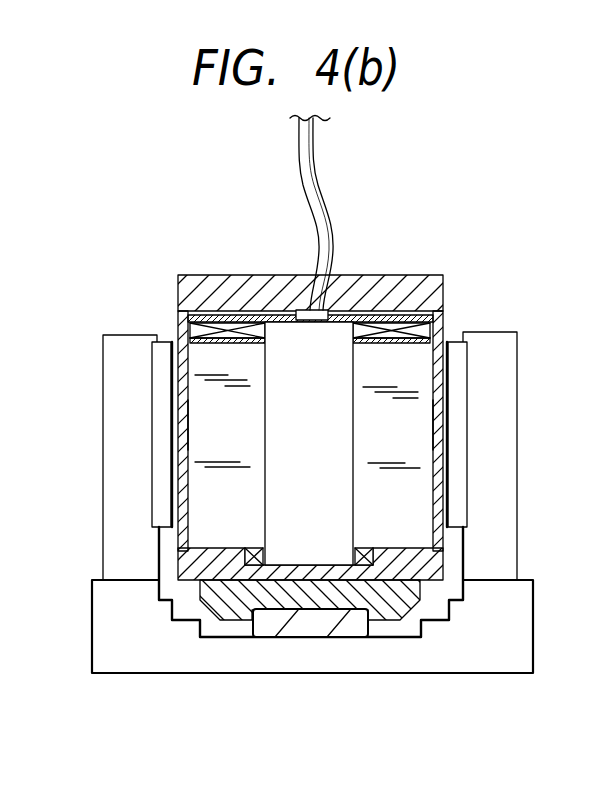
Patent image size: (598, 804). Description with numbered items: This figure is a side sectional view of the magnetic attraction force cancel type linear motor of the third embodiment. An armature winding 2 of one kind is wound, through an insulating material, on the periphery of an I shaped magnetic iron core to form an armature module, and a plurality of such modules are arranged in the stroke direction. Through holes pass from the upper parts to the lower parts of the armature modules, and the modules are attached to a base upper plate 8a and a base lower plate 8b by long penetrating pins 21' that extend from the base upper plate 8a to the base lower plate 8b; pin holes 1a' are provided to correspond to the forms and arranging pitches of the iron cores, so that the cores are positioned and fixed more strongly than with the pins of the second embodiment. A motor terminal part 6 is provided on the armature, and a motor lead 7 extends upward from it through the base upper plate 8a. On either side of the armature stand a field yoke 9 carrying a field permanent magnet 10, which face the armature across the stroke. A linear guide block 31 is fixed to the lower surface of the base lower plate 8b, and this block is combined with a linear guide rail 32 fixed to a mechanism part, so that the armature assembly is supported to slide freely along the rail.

The motor lead 7 is at (316, 146).
The armature winding 2 is at (240, 335).
The pin hole 1a' is at (309, 298).
The base upper plate 8a is at (388, 282).
The field permanent magnet 10 is at (163, 349).
The field yoke 9 is at (118, 347).
The penetrating pin 21' is at (325, 439).
The linear guide rail 32 is at (93, 648).
The base lower plate 8b is at (200, 572).
The linear guide block 31 is at (222, 612).
The motor terminal part 6 is at (305, 530).